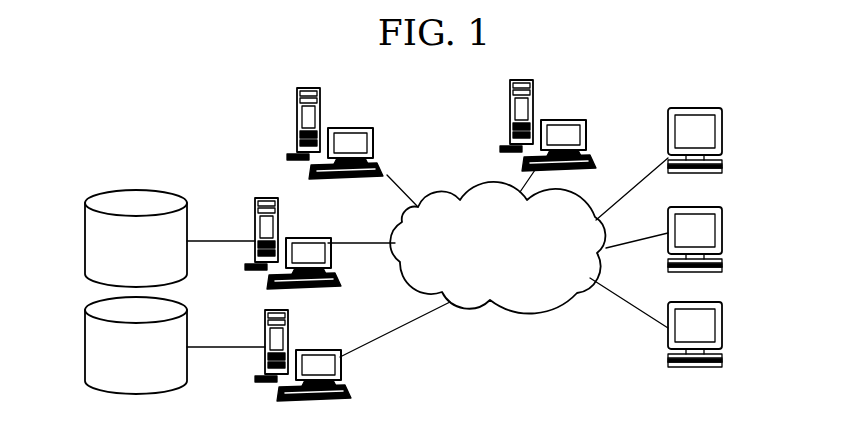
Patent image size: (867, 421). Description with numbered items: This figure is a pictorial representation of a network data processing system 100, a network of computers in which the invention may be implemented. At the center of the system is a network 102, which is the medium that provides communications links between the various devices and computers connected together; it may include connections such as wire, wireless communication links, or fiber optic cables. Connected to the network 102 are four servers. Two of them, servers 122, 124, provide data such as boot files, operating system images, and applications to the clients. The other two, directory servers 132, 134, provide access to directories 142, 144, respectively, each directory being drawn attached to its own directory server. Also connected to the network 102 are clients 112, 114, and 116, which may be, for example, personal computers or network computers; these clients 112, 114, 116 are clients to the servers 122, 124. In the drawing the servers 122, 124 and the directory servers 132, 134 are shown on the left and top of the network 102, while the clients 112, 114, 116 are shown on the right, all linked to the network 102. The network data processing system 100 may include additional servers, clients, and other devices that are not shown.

The network data processing system 100 is at (454, 82).
The network 102 is at (520, 247).
The client 112 is at (722, 135).
The client 114 is at (722, 235).
The client 116 is at (722, 332).
The server 122 is at (297, 125).
The server 124 is at (511, 131).
The directory server 132 is at (331, 261).
The directory server 134 is at (340, 367).
The directory 142 is at (85, 247).
The directory 144 is at (85, 362).